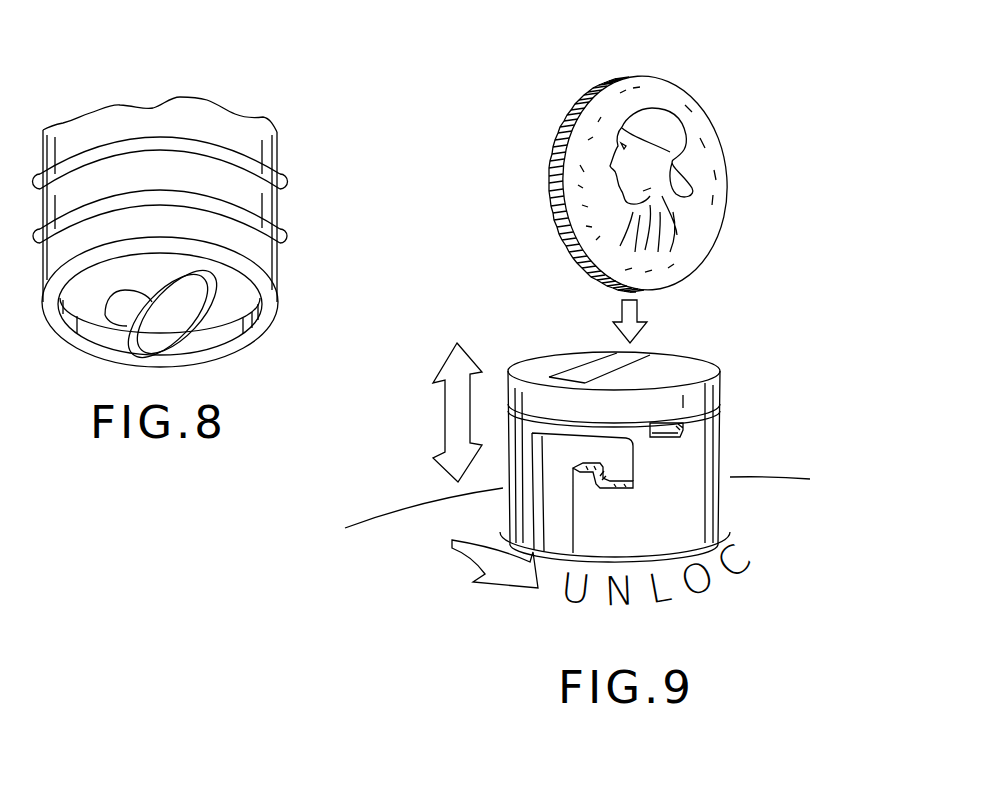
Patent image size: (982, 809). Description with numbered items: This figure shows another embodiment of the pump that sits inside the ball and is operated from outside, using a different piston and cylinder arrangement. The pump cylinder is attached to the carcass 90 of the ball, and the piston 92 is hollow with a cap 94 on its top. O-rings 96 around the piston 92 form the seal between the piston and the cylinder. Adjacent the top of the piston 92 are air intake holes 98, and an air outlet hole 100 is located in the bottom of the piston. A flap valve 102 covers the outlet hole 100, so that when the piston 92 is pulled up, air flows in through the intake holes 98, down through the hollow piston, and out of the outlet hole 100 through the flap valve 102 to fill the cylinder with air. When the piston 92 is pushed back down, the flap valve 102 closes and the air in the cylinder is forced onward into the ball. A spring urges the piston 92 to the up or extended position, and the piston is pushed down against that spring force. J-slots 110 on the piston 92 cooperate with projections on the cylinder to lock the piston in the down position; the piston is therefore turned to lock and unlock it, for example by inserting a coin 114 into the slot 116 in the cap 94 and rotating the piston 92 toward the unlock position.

In FIG. 9, the carcass 90 is at (387, 528).
In FIG. 8, the piston 92 is at (265, 202).
In FIG. 9, the piston 92 is at (720, 455).
In FIG. 9, the cap 94 is at (687, 370).
In FIG. 8, the O-rings 96 is at (282, 180).
In FIG. 9, the air intake holes 98 is at (673, 427).
In FIG. 8, the air outlet hole 100 is at (132, 296).
In FIG. 8, the flap valve 102 is at (185, 297).
In FIG. 9, the J-slots 110 is at (560, 540).
In FIG. 9, the coin 114 is at (720, 220).
In FIG. 9, the slot 116 is at (575, 372).